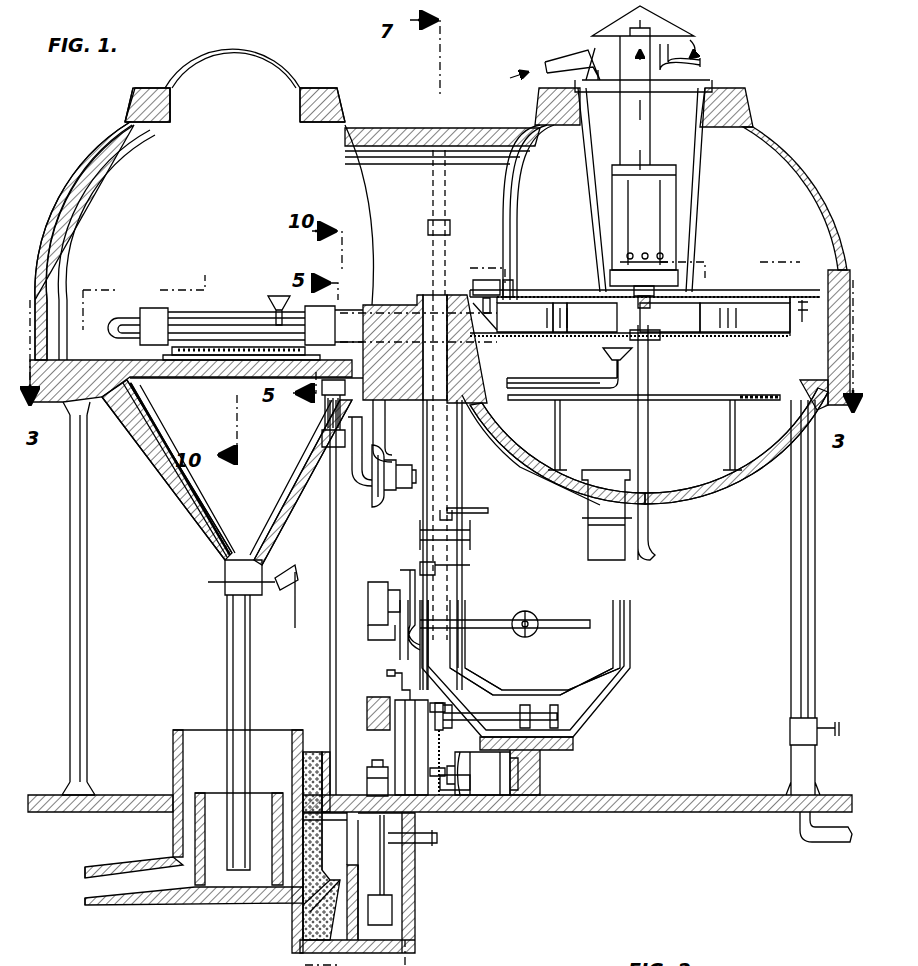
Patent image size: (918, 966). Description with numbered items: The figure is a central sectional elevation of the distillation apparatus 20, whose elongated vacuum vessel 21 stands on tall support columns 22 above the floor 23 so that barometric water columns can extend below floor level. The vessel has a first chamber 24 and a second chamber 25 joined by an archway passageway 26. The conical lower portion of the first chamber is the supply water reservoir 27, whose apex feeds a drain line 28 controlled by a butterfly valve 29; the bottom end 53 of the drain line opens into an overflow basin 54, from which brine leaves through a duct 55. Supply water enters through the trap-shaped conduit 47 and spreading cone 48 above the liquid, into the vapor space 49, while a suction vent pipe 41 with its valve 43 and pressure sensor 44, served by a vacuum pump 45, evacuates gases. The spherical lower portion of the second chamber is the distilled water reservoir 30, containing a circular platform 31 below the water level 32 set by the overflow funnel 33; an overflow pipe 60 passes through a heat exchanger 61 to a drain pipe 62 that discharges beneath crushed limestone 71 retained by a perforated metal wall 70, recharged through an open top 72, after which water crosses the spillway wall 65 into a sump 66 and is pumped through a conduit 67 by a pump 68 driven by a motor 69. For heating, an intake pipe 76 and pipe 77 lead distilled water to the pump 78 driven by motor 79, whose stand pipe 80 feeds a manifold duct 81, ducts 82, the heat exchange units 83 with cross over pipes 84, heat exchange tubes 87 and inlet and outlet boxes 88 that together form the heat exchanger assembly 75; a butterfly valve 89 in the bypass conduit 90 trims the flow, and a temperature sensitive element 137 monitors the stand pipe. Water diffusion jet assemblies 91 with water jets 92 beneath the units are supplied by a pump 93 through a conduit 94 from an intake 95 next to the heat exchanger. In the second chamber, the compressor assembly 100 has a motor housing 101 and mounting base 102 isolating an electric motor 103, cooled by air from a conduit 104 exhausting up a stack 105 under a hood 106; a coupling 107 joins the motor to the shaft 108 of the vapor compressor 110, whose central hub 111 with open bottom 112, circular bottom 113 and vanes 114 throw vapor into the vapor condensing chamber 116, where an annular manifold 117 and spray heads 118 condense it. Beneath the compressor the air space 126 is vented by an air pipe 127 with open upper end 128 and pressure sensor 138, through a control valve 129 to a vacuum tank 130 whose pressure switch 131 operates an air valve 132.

The distillation apparatus 20 is at (620, 830).
The vacuum vessel 21 is at (100, 150).
The support columns 22 is at (133, 598).
The floor 23 is at (640, 798).
The first chamber 24 is at (72, 190).
The second chamber 25 is at (793, 160).
The passageway 26 is at (395, 138).
The supply water reservoir 27 is at (195, 483).
The drain line 28 is at (228, 653).
The butterfly valve 29 is at (240, 575).
The distilled water reservoir 30 is at (705, 480).
The circular platform 31 is at (683, 397).
The water level 32 is at (708, 292).
The overflow funnel 33 is at (612, 358).
The suction vent pipe 41 is at (448, 202).
The valve 43 is at (398, 588).
The pressure sensor 44 is at (462, 568).
The vacuum pump 45 is at (420, 772).
The conduit 47 is at (270, 300).
The spreading cone 48 is at (274, 295).
The vapor space 49 is at (211, 179).
The bottom end of drain line 53 is at (240, 880).
The overflow basin 54 is at (270, 805).
The duct 55 is at (123, 893).
The overflow pipe 60 is at (522, 388).
The heat exchanger 61 is at (322, 411).
The drain pipe 62 is at (330, 642).
The spillway wall 65 is at (380, 828).
The sump 66 is at (380, 938).
The conduit 67 is at (432, 841).
The pump 68 is at (392, 905).
The motor 69 is at (372, 778).
The perforated metal wall 70 is at (335, 879).
The crushed limestone 71 is at (310, 765).
The open top 72 is at (326, 750).
The heat exchanger assembly 75 is at (172, 305).
The intake pipe 76 is at (595, 506).
The pipe 77 is at (630, 652).
The pump 78 is at (538, 705).
The motor 79 is at (480, 770).
The stand pipe 80 is at (460, 611).
The manifold duct 81 is at (530, 450).
The ducts 82 is at (350, 310).
The heat exchange units 83 is at (152, 310).
The cross over pipes 84 is at (110, 325).
The heat exchange tubes 87 is at (215, 354).
The inlet and outlet boxes 88 is at (318, 318).
The butterfly valve 89 is at (514, 633).
The bypass conduit 90 is at (540, 620).
The water diffusion jet assemblies 91 is at (197, 370).
The water jets 92 is at (198, 345).
The pump 93 is at (375, 504).
The conduit 94 is at (380, 435).
The intake 95 is at (325, 433).
The compressor assembly 100 is at (700, 262).
The motor housing 101 is at (702, 170).
The mounting base 102 is at (606, 268).
The electric motor 103 is at (655, 210).
The conduit 104 is at (568, 62).
The stack 105 is at (700, 62).
The hood 106 is at (690, 28).
The coupling 107 is at (632, 288).
The shaft 108 is at (636, 302).
The vapor compressor 110 is at (775, 288).
The central hub 111 is at (682, 332).
The open bottom 112 is at (663, 340).
The circular bottom 113 is at (762, 338).
The vanes 114 is at (550, 332).
The vapor condensing chamber 116 is at (478, 292).
The annular manifold 117 is at (503, 278).
The spray heads 118 is at (487, 316).
The air space 126 is at (710, 330).
The air pipe 127 is at (650, 465).
The open upper end 128 is at (635, 340).
The control valve 129 is at (368, 599).
The vacuum tank 130 is at (370, 640).
The pressure switch 131 is at (387, 673).
The air valve 132 is at (390, 713).
The temperature sensitive element 137 is at (452, 496).
The pressure sensor 138 is at (420, 568).